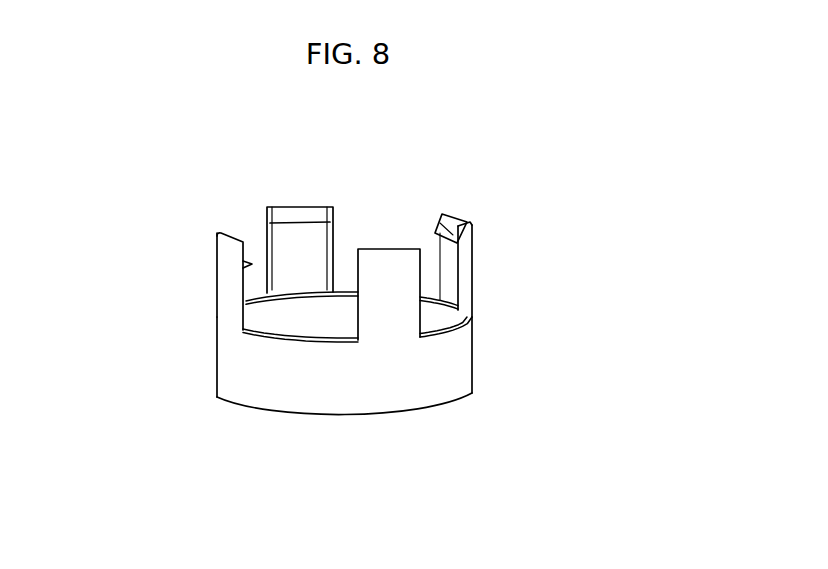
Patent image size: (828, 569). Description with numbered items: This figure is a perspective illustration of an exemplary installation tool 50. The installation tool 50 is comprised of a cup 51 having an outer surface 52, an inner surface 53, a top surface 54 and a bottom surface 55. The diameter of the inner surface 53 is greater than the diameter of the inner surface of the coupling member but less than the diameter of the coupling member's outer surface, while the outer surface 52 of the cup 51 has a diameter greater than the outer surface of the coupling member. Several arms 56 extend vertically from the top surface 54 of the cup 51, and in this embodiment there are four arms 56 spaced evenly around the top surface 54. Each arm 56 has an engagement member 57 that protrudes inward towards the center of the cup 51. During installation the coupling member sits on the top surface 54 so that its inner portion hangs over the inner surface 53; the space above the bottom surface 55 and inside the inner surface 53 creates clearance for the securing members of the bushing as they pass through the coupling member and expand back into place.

The installation tool 50 is at (540, 357).
The cup 51 is at (217, 340).
The outer surface 52 is at (413, 388).
The inner surface 53 is at (296, 312).
The top surface 54 is at (467, 317).
The bottom surface 55 is at (280, 413).
The arm 56 is at (472, 260).
The engagement member 57 is at (440, 217).